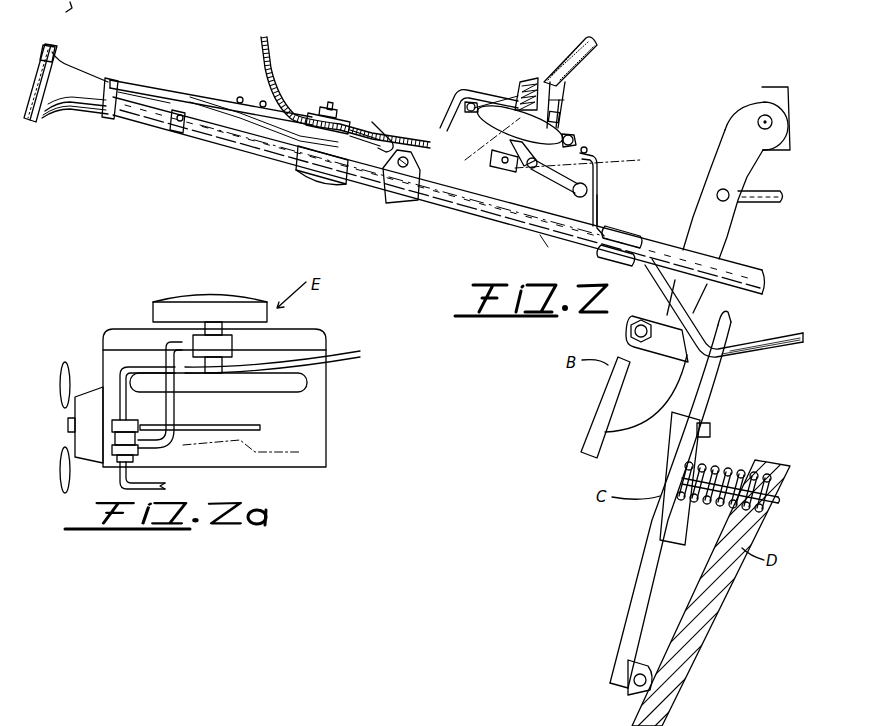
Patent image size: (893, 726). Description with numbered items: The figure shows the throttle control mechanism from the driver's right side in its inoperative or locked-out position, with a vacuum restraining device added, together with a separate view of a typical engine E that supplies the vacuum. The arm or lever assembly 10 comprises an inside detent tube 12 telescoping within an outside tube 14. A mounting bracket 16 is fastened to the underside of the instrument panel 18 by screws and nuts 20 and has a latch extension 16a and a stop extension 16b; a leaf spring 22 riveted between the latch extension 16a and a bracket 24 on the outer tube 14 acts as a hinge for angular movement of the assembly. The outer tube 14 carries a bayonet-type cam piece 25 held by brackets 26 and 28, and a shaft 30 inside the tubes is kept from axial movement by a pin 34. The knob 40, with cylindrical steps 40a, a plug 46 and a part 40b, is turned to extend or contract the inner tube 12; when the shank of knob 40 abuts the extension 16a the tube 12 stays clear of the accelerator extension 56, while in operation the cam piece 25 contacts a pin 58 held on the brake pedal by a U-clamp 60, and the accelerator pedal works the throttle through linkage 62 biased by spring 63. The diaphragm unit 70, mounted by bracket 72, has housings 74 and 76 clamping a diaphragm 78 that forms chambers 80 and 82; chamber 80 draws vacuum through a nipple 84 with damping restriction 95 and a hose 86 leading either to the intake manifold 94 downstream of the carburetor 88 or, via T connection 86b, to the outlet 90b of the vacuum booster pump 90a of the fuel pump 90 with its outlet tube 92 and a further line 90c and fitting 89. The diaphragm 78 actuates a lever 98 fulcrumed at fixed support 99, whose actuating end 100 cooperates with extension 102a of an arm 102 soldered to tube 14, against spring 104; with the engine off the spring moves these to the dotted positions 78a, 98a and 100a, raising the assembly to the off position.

In FIG. 2, the arm or lever assembly 10 is at (467, 225).
In FIG. 2, the inside detent tube 12 is at (733, 262).
In FIG. 2, the outside tube 14 is at (540, 235).
In FIG. 2, the mounting bracket 16 is at (352, 128).
In FIG. 2, the latch extension 16a is at (158, 85).
In FIG. 2, the stop extension 16b is at (388, 135).
In FIG. 2, the vehicle instrument panel 18 is at (278, 72).
In FIG. 2, the screws and nuts 20 is at (330, 102).
In FIG. 2, the leaf spring member 22 is at (282, 142).
In FIG. 2, the bracket 24 is at (318, 172).
In FIG. 2, the bayonet-type cam piece 25 is at (645, 265).
In FIG. 2, the bracket 26 is at (392, 192).
In FIG. 2, the bracket 28 is at (616, 228).
In FIG. 2, the rod or shaft 30 is at (134, 115).
In FIG. 2, the pin 34 is at (178, 134).
In FIG. 2, the knob 40 is at (78, 78).
In FIG. 2, the cylindrical steps 40a is at (108, 120).
In FIG. 2, the grip end tab 40b is at (55, 62).
In FIG. 2, the plug 46 is at (28, 75).
In FIG. 2, the accelerator extension 56 is at (731, 326).
In FIG. 2, the rod or pin 58 is at (634, 331).
In FIG. 2, the U-clamp 60 is at (658, 320).
In FIG. 2, the linkage 62 is at (740, 472).
In FIG. 2, the spring 63 is at (707, 510).
In FIG. 2, the vacuum device or diaphragm unit 70 is at (515, 75).
In FIG. 2, the bracket 72 is at (462, 92).
In FIG. 2, the housing 74 is at (486, 105).
In FIG. 2, the housing 76 is at (500, 128).
In FIG. 2, the diaphragm 78 is at (574, 138).
In FIG. 2, the diaphragm (dotted position) 78a is at (472, 158).
In FIG. 2, the chamber 80 is at (552, 95).
In FIG. 2, the chamber 82 is at (476, 112).
In FIG. 2, the hose nipple 84 is at (566, 100).
In FIG. 2, the flexible rubber hose or tube 86 is at (578, 46).
In FIG. 2a, the flexible rubber hose or tube 86 is at (345, 352).
In FIG. 2a, the T connection 86b is at (236, 451).
In FIG. 2a, the carburetor 88 is at (210, 345).
In FIG. 2a, the outlet pipe 89 is at (166, 486).
In FIG. 2a, the fuel pump 90 is at (120, 462).
In FIG. 2a, the vacuum booster pump 90a is at (122, 425).
In FIG. 2a, the outlet 90b is at (258, 422).
In FIG. 2a, the valve pipe 90c is at (120, 365).
In FIG. 2a, the outlet tube 92 is at (176, 408).
In FIG. 2a, the intake manifold 94 is at (305, 383).
In FIG. 2, the damping restriction 95 is at (562, 112).
In FIG. 2, the lever 98 is at (534, 168).
In FIG. 2, the lever (dotted position) 98a is at (566, 190).
In FIG. 2, the fixed support 99 is at (515, 168).
In FIG. 2, the actuating end 100 is at (600, 195).
In FIG. 2, the actuating end (dotted position) 100a is at (596, 163).
In FIG. 2, the bracket or arm 102 is at (597, 183).
In FIG. 2, the extension 102a is at (590, 150).
In FIG. 2, the spring 104 is at (530, 84).